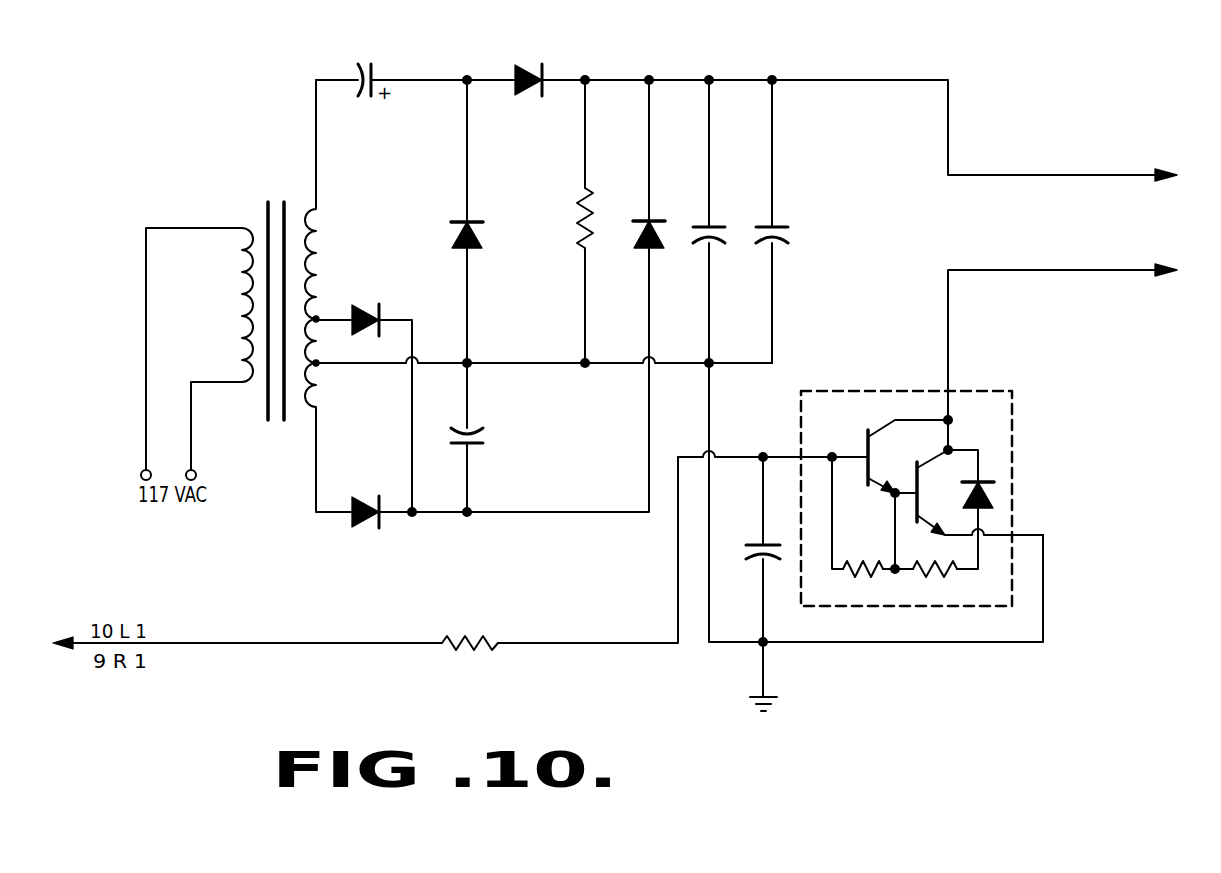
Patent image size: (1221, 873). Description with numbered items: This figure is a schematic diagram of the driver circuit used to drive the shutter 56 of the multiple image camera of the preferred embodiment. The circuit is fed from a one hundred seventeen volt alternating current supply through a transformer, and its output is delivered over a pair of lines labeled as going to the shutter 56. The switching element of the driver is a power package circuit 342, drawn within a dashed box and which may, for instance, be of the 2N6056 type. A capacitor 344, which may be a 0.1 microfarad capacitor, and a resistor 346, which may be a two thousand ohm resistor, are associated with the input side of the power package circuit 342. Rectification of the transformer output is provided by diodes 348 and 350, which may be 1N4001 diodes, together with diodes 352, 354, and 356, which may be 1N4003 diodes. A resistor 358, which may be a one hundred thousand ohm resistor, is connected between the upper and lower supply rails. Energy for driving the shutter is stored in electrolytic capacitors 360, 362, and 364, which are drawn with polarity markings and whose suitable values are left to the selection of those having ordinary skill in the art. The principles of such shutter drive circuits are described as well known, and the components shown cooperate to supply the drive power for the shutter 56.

The shutter 56 is at (1169, 222).
The power package circuit 342 is at (1012, 435).
The capacitor 344 is at (748, 556).
The resistor 346 is at (490, 640).
The diode 348 is at (362, 497).
The diode 350 is at (372, 292).
The diode 352 is at (452, 240).
The diode 354 is at (524, 62).
The diode 356 is at (637, 246).
The resistor 358 is at (577, 193).
The electrolytic capacitor 360 is at (486, 437).
The electrolytic capacitor 362 is at (712, 244).
The electrolytic capacitor 364 is at (788, 237).